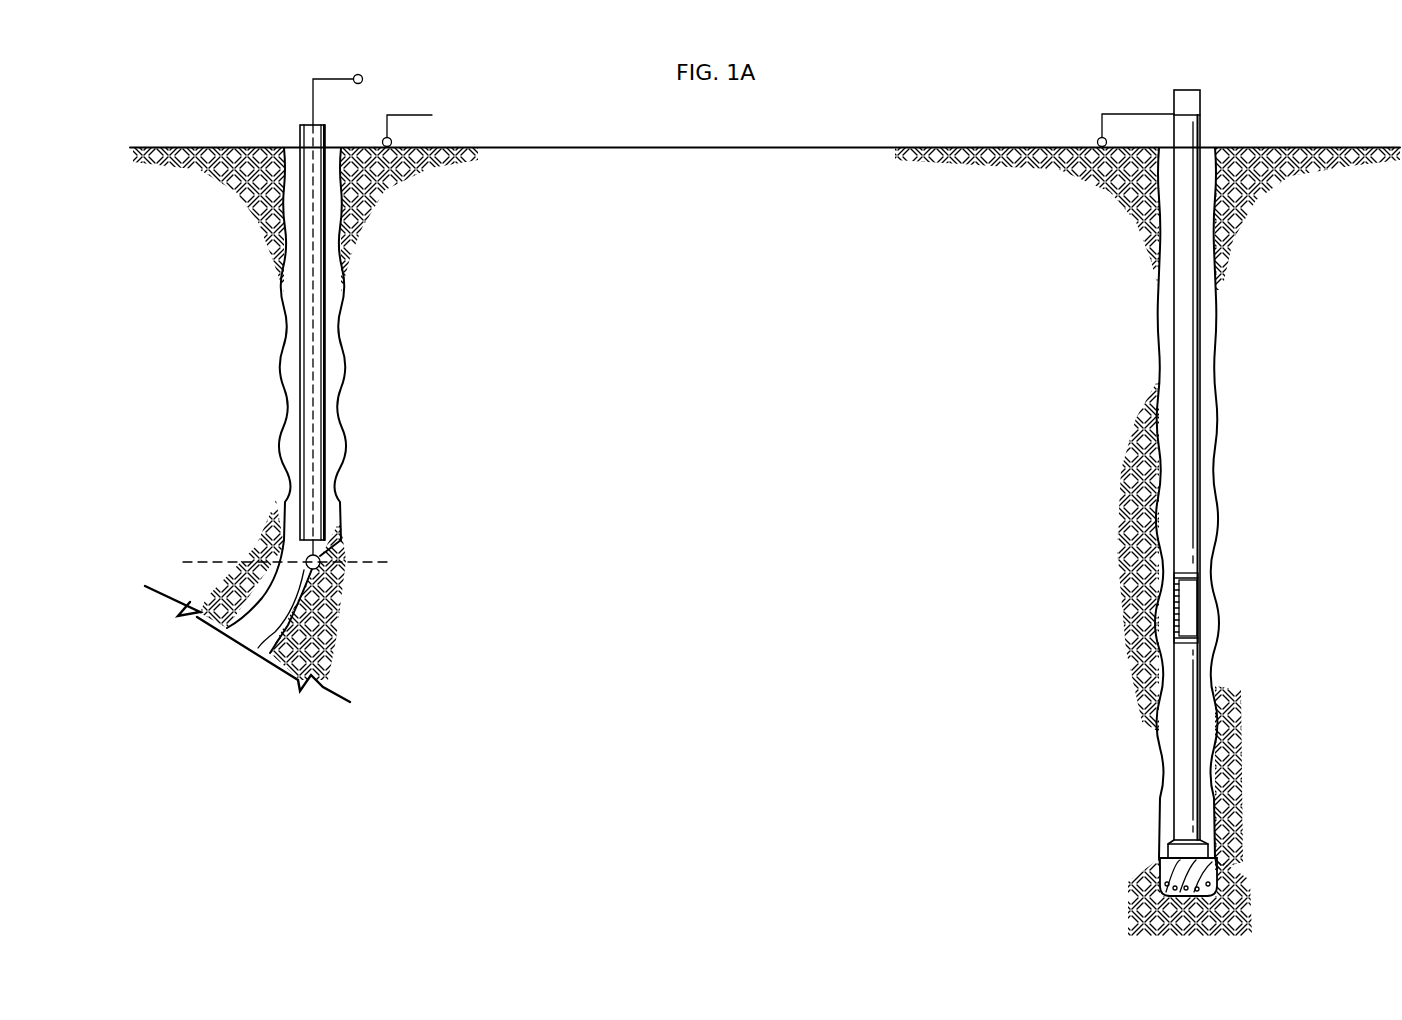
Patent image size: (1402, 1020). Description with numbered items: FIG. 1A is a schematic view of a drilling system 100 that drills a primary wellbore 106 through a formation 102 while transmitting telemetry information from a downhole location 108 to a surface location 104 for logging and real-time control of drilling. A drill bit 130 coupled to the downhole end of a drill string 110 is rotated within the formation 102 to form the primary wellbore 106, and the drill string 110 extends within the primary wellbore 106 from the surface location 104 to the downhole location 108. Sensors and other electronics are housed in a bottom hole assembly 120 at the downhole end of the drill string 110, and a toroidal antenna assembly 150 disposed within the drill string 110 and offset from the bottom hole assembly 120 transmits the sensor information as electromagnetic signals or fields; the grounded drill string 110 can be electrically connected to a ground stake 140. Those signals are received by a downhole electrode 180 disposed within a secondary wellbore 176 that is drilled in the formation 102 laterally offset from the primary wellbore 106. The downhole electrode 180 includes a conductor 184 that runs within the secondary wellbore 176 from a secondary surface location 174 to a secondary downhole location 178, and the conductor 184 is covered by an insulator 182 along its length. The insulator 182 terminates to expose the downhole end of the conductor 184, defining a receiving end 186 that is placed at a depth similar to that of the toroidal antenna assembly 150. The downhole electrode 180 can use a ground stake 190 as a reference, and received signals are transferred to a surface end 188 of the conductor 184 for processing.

The drilling system 100 is at (1304, 74).
The formation 102 is at (1307, 232).
The surface location 104 is at (1276, 147).
The primary wellbore 106 is at (1212, 148).
The downhole location 108 is at (1304, 780).
The drill string 110 is at (1187, 90).
The bottom hole assembly 120 is at (1183, 788).
The drill bit 130 is at (1214, 874).
The ground stake 140 is at (1138, 113).
The toroidal antenna assembly 150 is at (1192, 605).
The secondary surface location 174 is at (222, 147).
The secondary wellbore 176 is at (288, 147).
The secondary downhole location 178 is at (360, 534).
The downhole electrode 180 is at (312, 387).
The insulator 182 is at (300, 428).
The conductor 184 is at (313, 548).
The receiving end 186 is at (272, 655).
The surface end 188 is at (361, 74).
The ground stake 190 is at (418, 114).